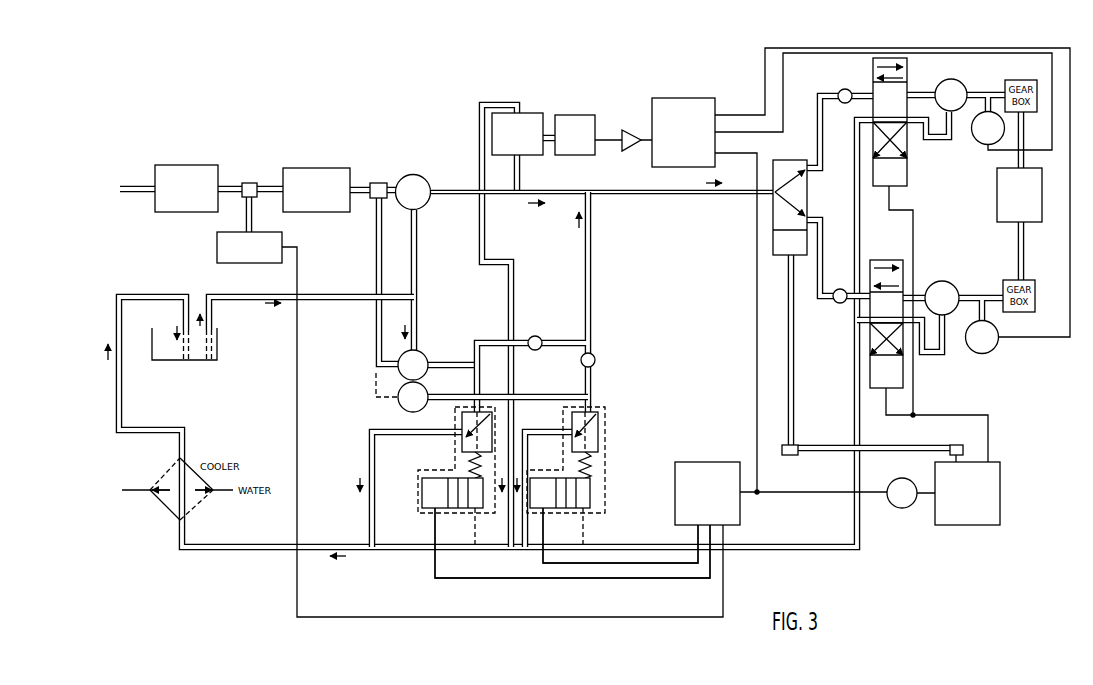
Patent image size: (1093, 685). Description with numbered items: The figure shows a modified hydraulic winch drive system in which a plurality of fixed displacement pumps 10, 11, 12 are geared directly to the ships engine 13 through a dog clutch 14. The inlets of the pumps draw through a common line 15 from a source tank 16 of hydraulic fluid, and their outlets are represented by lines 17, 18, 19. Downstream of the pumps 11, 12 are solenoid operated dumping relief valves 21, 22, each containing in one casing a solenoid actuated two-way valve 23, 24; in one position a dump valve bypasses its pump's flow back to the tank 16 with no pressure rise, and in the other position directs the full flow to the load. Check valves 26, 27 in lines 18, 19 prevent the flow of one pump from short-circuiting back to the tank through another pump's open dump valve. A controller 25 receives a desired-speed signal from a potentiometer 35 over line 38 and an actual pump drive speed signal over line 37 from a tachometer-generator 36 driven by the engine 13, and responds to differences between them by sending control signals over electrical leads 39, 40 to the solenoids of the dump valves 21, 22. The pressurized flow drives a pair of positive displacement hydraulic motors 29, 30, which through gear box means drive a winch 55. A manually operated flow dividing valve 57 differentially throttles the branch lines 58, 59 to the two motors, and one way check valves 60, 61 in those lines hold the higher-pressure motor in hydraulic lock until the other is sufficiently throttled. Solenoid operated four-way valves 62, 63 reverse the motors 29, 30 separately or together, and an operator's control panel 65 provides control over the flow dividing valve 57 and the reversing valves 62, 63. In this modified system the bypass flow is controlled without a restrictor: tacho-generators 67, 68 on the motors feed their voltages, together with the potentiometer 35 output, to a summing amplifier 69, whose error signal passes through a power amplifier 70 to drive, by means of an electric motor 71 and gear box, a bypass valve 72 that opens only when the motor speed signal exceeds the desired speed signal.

The fixed displacement pump 10 is at (421, 208).
The fixed displacement pump 11 is at (424, 356).
The fixed displacement pump 12 is at (428, 390).
The ships engine 13 is at (217, 168).
The dog clutch 14 is at (343, 168).
The common line 15 is at (303, 294).
The source tank 16 is at (218, 351).
The outlet line 17 is at (495, 195).
The outlet line 18 is at (485, 343).
The outlet line 19 is at (525, 396).
The solenoid operated dumping relief valve 21 is at (455, 469).
The solenoid operated dumping relief valve 22 is at (606, 447).
The solenoid actuated two-way valve 23 is at (422, 492).
The solenoid actuated two-way valve 24 is at (590, 493).
The controller 25 is at (742, 471).
The check valve 26 is at (535, 336).
The check valve 27 is at (597, 362).
The hydraulic motor 29 is at (968, 79).
The hydraulic motor 30 is at (961, 283).
The potentiometer 35 is at (896, 508).
The tachometer-generator 36 is at (283, 246).
The line 37 is at (447, 617).
The line 38 is at (810, 490).
The electrical lead 39 is at (453, 578).
The electrical lead 40 is at (543, 564).
The winch 55 is at (997, 195).
The manually operated flow dividing valve 57 is at (808, 196).
The branch line 58 is at (822, 148).
The branch line 59 is at (822, 250).
The one way check valve 60 is at (845, 89).
The one way check valve 61 is at (840, 305).
The solenoid operated four-way valve 62 is at (907, 76).
The solenoid operated four-way valve 63 is at (890, 260).
The operator's control panel 65 is at (1000, 492).
The tacho-generator 67 is at (976, 141).
The tacho-generator 68 is at (1004, 326).
The summing amplifier 69 is at (688, 98).
The power amplifier 70 is at (632, 131).
The electric motor 71 is at (575, 115).
The bypass valve 72 is at (536, 113).